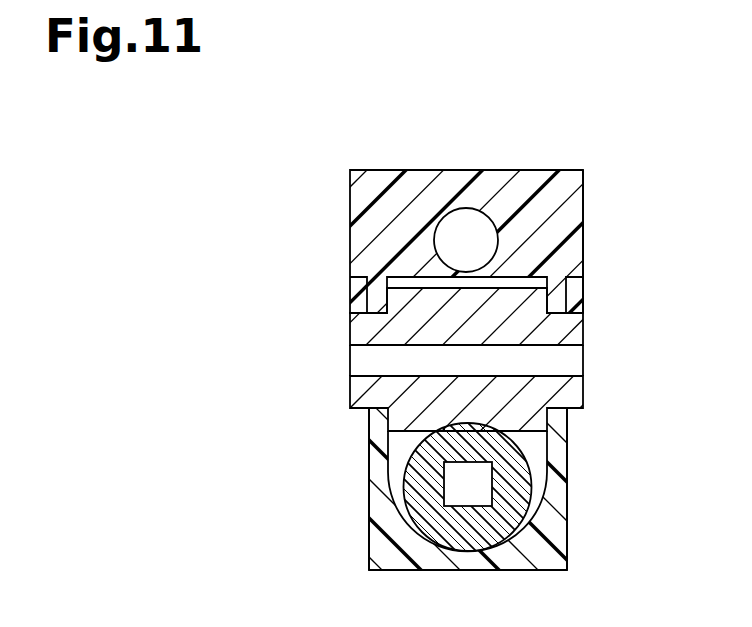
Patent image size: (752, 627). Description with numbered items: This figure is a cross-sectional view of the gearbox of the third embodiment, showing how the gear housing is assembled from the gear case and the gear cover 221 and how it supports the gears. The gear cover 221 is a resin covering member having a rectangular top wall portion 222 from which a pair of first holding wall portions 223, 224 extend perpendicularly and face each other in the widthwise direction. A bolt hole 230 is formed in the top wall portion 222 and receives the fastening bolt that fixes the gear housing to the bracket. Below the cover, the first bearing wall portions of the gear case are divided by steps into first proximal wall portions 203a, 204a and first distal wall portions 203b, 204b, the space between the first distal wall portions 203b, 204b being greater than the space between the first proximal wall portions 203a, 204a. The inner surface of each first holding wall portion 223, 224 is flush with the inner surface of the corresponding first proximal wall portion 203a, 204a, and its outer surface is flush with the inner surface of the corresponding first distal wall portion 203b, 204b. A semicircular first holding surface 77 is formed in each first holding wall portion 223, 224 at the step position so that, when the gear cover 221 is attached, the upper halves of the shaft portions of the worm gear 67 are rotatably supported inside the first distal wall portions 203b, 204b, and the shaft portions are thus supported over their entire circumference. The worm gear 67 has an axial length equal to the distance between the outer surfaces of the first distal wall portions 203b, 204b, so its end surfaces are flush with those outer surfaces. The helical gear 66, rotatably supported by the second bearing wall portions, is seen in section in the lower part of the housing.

The gear cover 221 is at (395, 164).
The bolt hole 230 is at (466, 208).
The top wall portion 222 is at (584, 203).
The first distal wall portion 204b is at (352, 283).
The first distal wall portion 203b is at (583, 283).
The first holding wall portion 224 is at (360, 301).
The first holding wall portion 223 is at (572, 300).
The first holding surface 77 is at (362, 322).
The worm gear 67 is at (578, 408).
The first proximal wall portion 204a is at (369, 508).
The first proximal wall portion 203a is at (567, 508).
The helical gear 66 is at (468, 553).